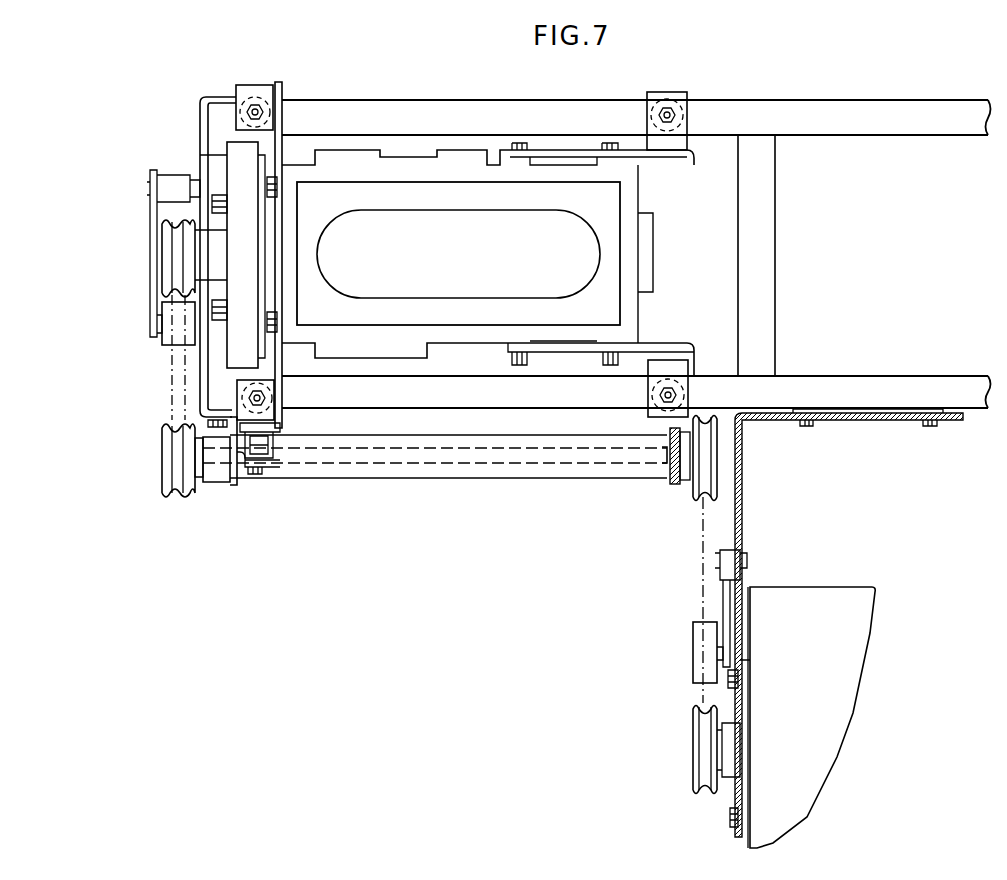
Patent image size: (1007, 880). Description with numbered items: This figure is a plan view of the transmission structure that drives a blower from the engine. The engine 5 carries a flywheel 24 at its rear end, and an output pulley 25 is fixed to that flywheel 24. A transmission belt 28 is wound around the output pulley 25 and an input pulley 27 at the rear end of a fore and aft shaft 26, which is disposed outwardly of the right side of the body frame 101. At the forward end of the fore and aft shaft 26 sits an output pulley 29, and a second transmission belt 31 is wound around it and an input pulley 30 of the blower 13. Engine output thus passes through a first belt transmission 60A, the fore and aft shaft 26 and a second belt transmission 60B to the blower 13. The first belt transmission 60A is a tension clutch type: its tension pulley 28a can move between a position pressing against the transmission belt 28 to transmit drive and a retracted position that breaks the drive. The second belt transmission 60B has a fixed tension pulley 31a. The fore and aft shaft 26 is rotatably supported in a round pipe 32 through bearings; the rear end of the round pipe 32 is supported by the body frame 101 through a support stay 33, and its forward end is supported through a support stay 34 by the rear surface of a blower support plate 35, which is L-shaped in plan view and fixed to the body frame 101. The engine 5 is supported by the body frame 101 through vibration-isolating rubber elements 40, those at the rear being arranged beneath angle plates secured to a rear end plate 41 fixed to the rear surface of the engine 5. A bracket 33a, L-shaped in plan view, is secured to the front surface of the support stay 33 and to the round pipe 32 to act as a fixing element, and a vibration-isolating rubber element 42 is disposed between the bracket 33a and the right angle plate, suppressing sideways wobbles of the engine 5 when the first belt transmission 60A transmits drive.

The body frame 101 is at (830, 128).
The vibration-isolating rubber element 40 is at (240, 112).
The rear end plate 41 is at (258, 149).
The flywheel 24 is at (250, 253).
The engine 5 is at (590, 258).
The output pulley 25 is at (167, 242).
The tension pulley 28a is at (162, 345).
The transmission belt 28 is at (185, 373).
The first belt transmission 60A is at (153, 401).
The input pulley 27 is at (162, 457).
The support stay 33 is at (228, 452).
The bracket 33a is at (245, 464).
The vibration-isolating rubber element 42 is at (262, 443).
The fore and aft shaft 26 is at (425, 465).
The round pipe 32 is at (505, 477).
The support stay 34 is at (677, 487).
The output pulley 29 is at (692, 497).
The blower support plate 35 is at (742, 514).
The transmission belt 31 is at (703, 588).
The second belt transmission 60B is at (682, 603).
The fixed tension pulley 31a is at (693, 673).
The input pulley 30 is at (693, 767).
The blower 13 is at (843, 597).